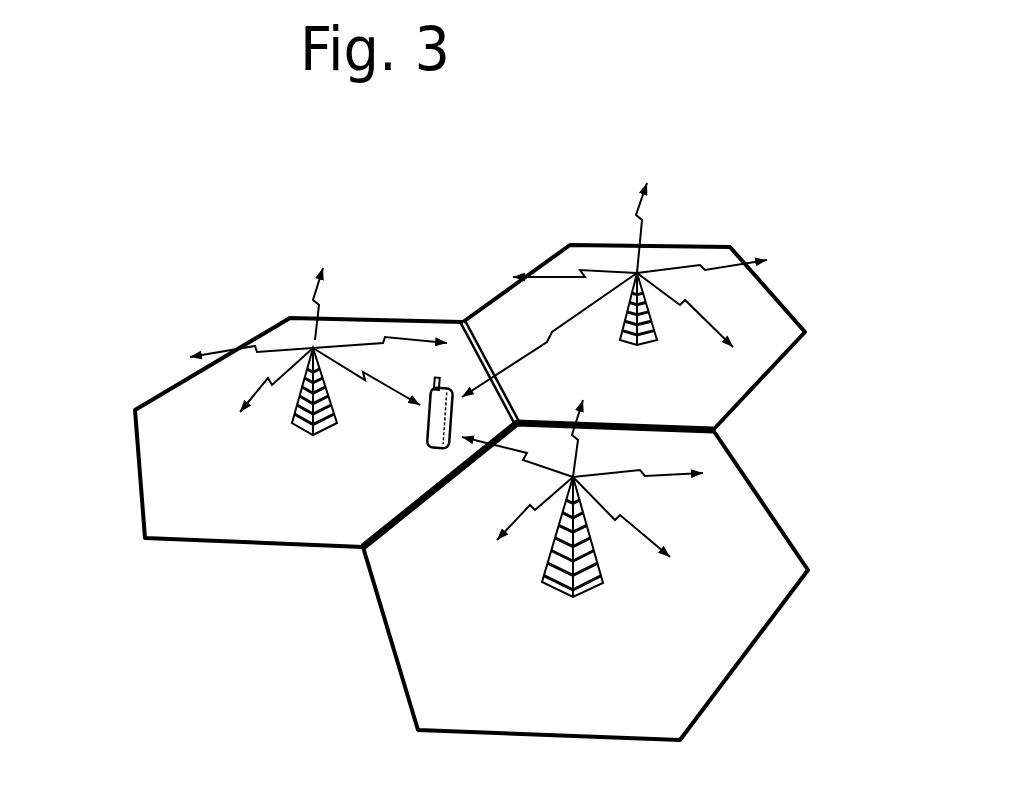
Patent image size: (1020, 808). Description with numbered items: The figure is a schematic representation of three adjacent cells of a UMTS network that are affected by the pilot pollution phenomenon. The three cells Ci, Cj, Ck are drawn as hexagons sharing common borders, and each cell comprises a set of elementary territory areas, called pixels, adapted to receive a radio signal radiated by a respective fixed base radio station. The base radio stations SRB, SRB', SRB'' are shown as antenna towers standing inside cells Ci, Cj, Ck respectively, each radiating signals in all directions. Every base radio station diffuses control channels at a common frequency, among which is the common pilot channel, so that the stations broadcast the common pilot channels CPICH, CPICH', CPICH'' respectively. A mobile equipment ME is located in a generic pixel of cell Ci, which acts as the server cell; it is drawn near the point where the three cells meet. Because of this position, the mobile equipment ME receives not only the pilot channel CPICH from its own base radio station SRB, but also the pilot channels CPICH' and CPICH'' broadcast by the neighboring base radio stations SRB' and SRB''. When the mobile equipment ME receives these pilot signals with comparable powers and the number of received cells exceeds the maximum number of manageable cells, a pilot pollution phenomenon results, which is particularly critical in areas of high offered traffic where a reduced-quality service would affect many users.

The cell Ci is at (150, 468).
The cell Cj is at (708, 670).
The cell Ck is at (770, 307).
The base radio station SRB is at (295, 308).
The base radio station SRB' is at (598, 529).
The base radio station SRB'' is at (650, 227).
The common pilot channel CPICH is at (366, 411).
The common pilot channel CPICH' is at (492, 491).
The common pilot channel CPICH'' is at (516, 328).
The mobile equipment ME is at (452, 418).